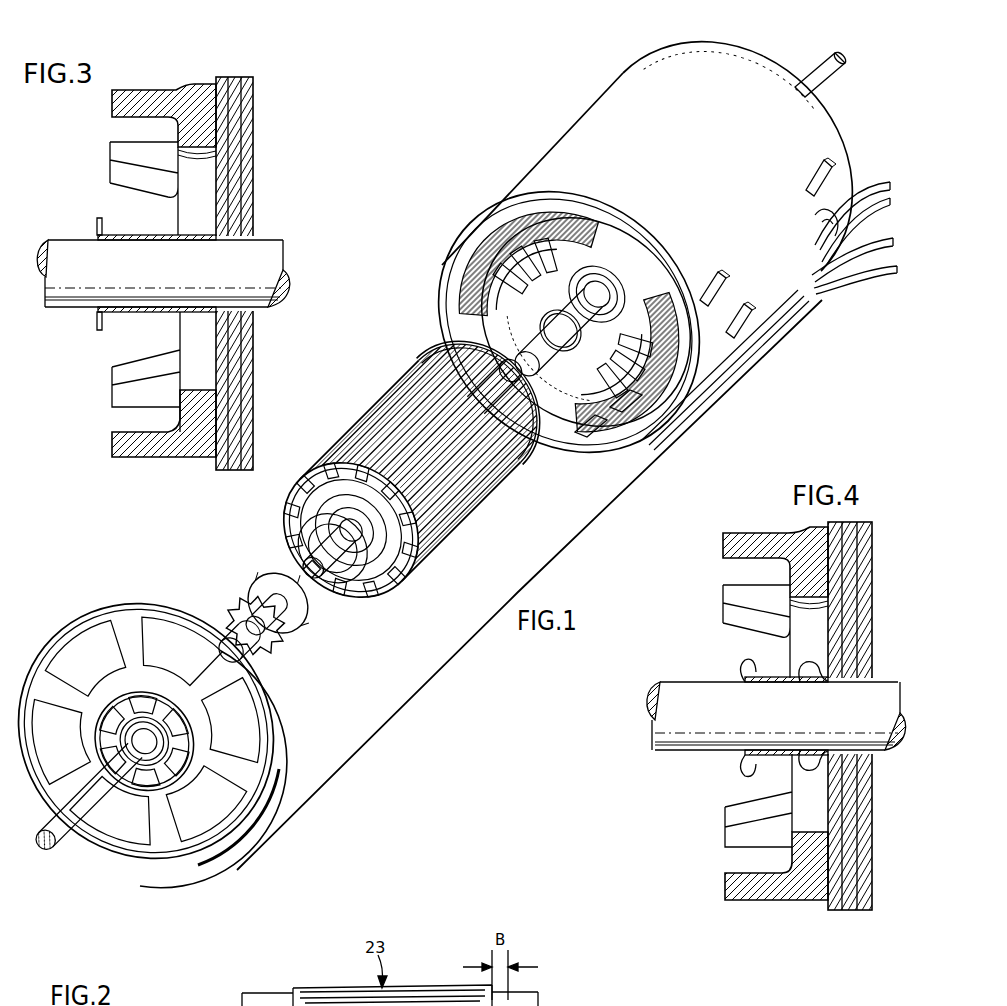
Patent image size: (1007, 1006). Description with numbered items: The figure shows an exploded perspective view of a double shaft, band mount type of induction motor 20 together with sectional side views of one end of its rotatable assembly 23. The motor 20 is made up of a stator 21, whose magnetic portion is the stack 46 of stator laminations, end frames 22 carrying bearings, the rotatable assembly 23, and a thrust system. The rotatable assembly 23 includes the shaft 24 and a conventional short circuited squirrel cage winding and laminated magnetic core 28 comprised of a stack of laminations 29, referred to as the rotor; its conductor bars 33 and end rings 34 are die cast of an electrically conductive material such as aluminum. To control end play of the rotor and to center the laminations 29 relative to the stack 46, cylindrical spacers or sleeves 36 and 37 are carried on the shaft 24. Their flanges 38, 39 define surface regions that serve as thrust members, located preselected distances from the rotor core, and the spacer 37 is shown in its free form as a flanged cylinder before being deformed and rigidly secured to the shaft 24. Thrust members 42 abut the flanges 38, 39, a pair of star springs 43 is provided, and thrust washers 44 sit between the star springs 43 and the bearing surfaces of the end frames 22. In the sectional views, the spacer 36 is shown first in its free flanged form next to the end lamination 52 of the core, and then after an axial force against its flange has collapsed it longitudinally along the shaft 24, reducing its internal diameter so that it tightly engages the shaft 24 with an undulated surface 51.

In FIG. 1, the induction motor 20 is at (584, 103).
In FIG. 1, the stator 21 is at (452, 298).
In FIG. 1, the end frames 22 is at (781, 64).
In FIG. 1, the rotatable assembly 23 is at (352, 418).
In FIG. 3, the shaft 24 is at (260, 248).
In FIG. 4, the shaft 24 is at (670, 723).
In FIG. 1, the shaft 24 is at (62, 838).
In FIG. 1, the laminated magnetic core 28 is at (470, 517).
In FIG. 3, the laminations 29 is at (230, 80).
In FIG. 1, the conductor bars 33 is at (507, 460).
In FIG. 1, the end rings 34 is at (543, 452).
In FIG. 3, the spacer 36 is at (134, 235).
In FIG. 4, the spacer 36 is at (745, 668).
In FIG. 1, the spacer 36 is at (310, 523).
In FIG. 1, the spacer 37 is at (576, 250).
In FIG. 3, the flange 38 is at (96, 322).
In FIG. 1, the flange 38 is at (310, 556).
In FIG. 1, the flange 39 is at (655, 306).
In FIG. 1, the thrust members 42 is at (291, 611).
In FIG. 1, the star springs 43 is at (244, 607).
In FIG. 1, the thrust washers 44 is at (254, 653).
In FIG. 1, the stack of stator laminations 46 is at (586, 210).
In FIG. 4, the undulated surface 51 is at (800, 665).
In FIG. 3, the end lamination 52 is at (218, 470).
In FIG. 4, the end lamination 52 is at (828, 907).